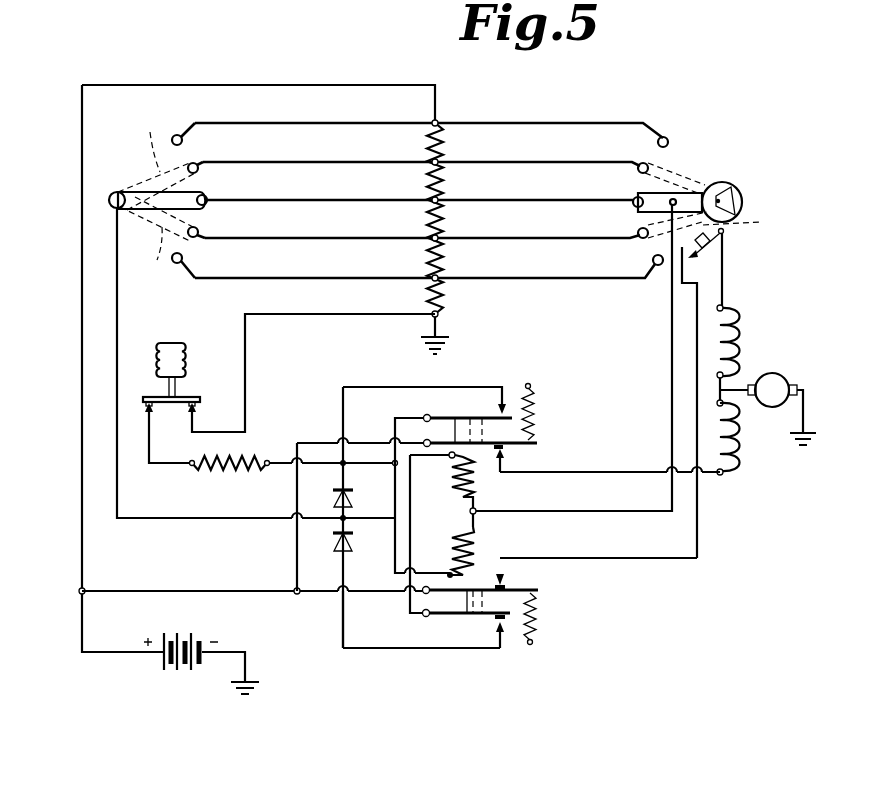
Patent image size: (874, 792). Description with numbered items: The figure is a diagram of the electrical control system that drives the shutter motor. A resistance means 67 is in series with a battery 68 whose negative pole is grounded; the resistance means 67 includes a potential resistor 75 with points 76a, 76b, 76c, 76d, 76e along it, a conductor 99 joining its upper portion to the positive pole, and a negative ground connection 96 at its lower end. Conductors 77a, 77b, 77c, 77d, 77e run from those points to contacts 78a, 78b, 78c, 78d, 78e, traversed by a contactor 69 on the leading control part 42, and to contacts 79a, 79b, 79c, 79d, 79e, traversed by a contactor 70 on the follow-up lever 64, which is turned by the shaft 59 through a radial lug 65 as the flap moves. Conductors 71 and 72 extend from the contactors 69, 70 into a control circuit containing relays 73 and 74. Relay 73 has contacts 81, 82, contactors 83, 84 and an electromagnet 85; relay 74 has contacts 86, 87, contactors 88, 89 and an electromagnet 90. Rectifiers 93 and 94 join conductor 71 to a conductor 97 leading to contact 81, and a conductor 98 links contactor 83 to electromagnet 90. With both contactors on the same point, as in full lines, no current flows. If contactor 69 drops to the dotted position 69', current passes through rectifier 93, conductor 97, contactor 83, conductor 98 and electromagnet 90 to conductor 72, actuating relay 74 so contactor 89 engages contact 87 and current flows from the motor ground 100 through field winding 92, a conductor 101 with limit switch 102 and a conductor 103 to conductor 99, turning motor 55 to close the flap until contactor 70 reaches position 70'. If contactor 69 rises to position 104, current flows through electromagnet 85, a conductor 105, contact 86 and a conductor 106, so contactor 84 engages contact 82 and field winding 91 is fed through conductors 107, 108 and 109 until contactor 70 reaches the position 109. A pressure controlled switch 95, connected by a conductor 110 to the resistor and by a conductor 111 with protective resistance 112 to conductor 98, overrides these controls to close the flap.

The conductor 99 is at (268, 85).
The battery 68 is at (180, 672).
The conductor 71 is at (120, 335).
The conductor 108 is at (296, 568).
The conductor 103 is at (317, 595).
The leading control part 42 is at (116, 188).
The contactor 69 is at (161, 206).
The dotted line position of contactor 69 69' is at (160, 255).
The dotted line position of contactor 69 104 is at (153, 143).
The contact 78a is at (177, 135).
The contact 78b is at (197, 164).
The contact 78c is at (207, 199).
The contact 78d is at (199, 231).
The contact 78e is at (182, 258).
The conductor 77a is at (311, 122).
The conductor 77b is at (300, 161).
The conductor 77c is at (301, 199).
The conductor 77d is at (301, 237).
The conductor 77e is at (301, 277).
The potential resistor 75 is at (427, 142).
The point 76a is at (440, 122).
The point 76b is at (440, 162).
The point 76c is at (440, 200).
The point 76d is at (440, 238).
The point 76e is at (440, 278).
The resistance means 67 is at (452, 140).
The contact 79a is at (663, 137).
The contact 79b is at (641, 163).
The contact 79c is at (622, 187).
The contact 79d is at (639, 231).
The contact 79e is at (653, 260).
The contactor 70 is at (678, 176).
The dotted line position of contactor 70 109 is at (676, 155).
The dotted line position of contactor 70 70' is at (722, 226).
The lever 64 is at (731, 184).
The radial lug 65 is at (737, 194).
The shaft 59 is at (742, 203).
The limit switch 102 is at (708, 250).
The conductor 101 is at (724, 290).
The conductor 72 is at (670, 335).
The field winding 92 is at (742, 333).
The field winding 91 is at (740, 446).
The motor 55 is at (779, 374).
The motor ground 100 is at (795, 438).
The conductor 107 is at (610, 472).
The ground connection 96 is at (440, 316).
The conductor 110 is at (300, 315).
The pressure controlled switch 95 is at (192, 370).
The conductor 111 is at (147, 462).
The protective resistance 112 is at (226, 478).
The conductor 97 is at (370, 386).
The relay 73 is at (437, 428).
The contactor 84 is at (457, 417).
The contactor 83 is at (470, 417).
The contact 81 is at (505, 405).
The contact 82 is at (505, 462).
The conductor 98 is at (395, 421).
The rectifier 93 is at (351, 501).
The rectifier 94 is at (353, 543).
The conductor 105 is at (411, 530).
The electromagnet 85 is at (477, 488).
The electromagnet 90 is at (478, 553).
The relay 74 is at (452, 604).
The contactor 88 is at (466, 616).
The contactor 89 is at (473, 615).
The contact 87 is at (510, 575).
The contact 86 is at (512, 620).
The conductor 106 is at (395, 650).